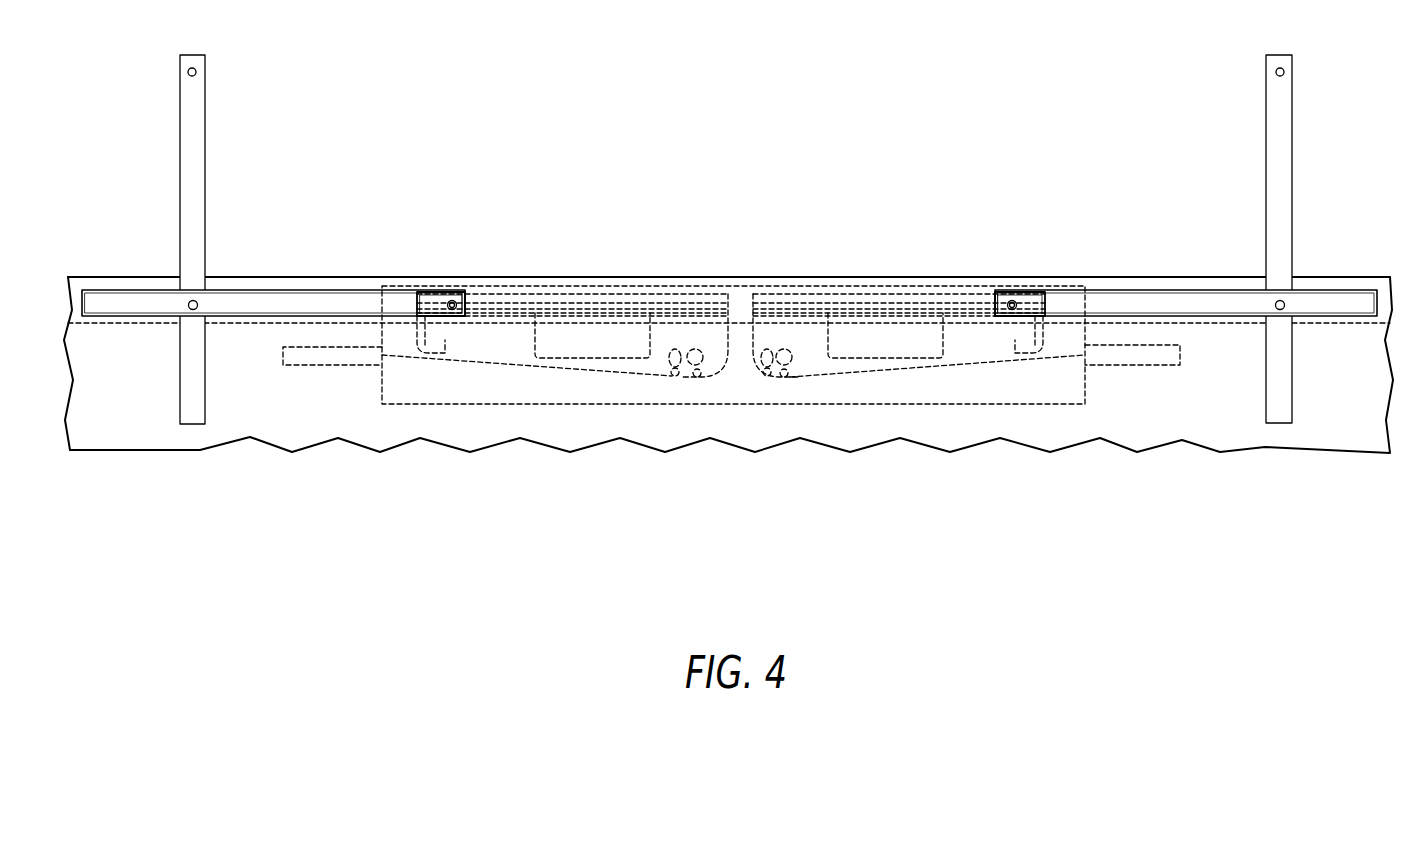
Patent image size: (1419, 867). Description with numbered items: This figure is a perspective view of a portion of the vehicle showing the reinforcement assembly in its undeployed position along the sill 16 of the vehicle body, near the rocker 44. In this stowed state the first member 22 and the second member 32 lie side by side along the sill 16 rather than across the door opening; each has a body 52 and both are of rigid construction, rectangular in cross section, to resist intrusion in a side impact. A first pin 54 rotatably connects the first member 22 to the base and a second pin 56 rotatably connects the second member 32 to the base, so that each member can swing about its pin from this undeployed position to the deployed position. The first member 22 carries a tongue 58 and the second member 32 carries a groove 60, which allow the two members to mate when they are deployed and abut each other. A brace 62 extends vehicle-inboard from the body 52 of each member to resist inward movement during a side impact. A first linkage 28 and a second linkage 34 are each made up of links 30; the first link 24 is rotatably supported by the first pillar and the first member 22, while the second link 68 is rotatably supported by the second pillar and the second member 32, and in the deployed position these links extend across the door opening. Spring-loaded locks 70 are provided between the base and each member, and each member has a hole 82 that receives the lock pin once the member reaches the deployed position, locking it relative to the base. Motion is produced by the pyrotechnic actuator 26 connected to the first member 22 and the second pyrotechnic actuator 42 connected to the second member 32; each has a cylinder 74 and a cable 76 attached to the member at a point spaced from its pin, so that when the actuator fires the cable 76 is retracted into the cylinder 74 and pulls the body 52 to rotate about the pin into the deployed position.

The sill 16 is at (233, 330).
The rocker 44 is at (258, 332).
The second link 68 is at (181, 120).
The second linkage 34 is at (176, 185).
The first link 24 is at (1293, 120).
The first linkage 28 is at (1297, 185).
The link 30 is at (118, 292).
The second member 32 is at (578, 300).
The first member 22 is at (890, 300).
The groove 60 is at (500, 300).
The tongue 58 is at (975, 300).
The second pin 56 is at (693, 347).
The first pin 54 is at (786, 347).
The brace 62 is at (560, 340).
The body 52 is at (445, 345).
The cable 76 is at (500, 362).
The hole 82 is at (695, 366).
The spring-loaded lock 70 is at (667, 372).
The second pyrotechnic actuator 42 is at (330, 366).
The pyrotechnic actuator 26 is at (1143, 366).
The cylinder 74 is at (283, 356).